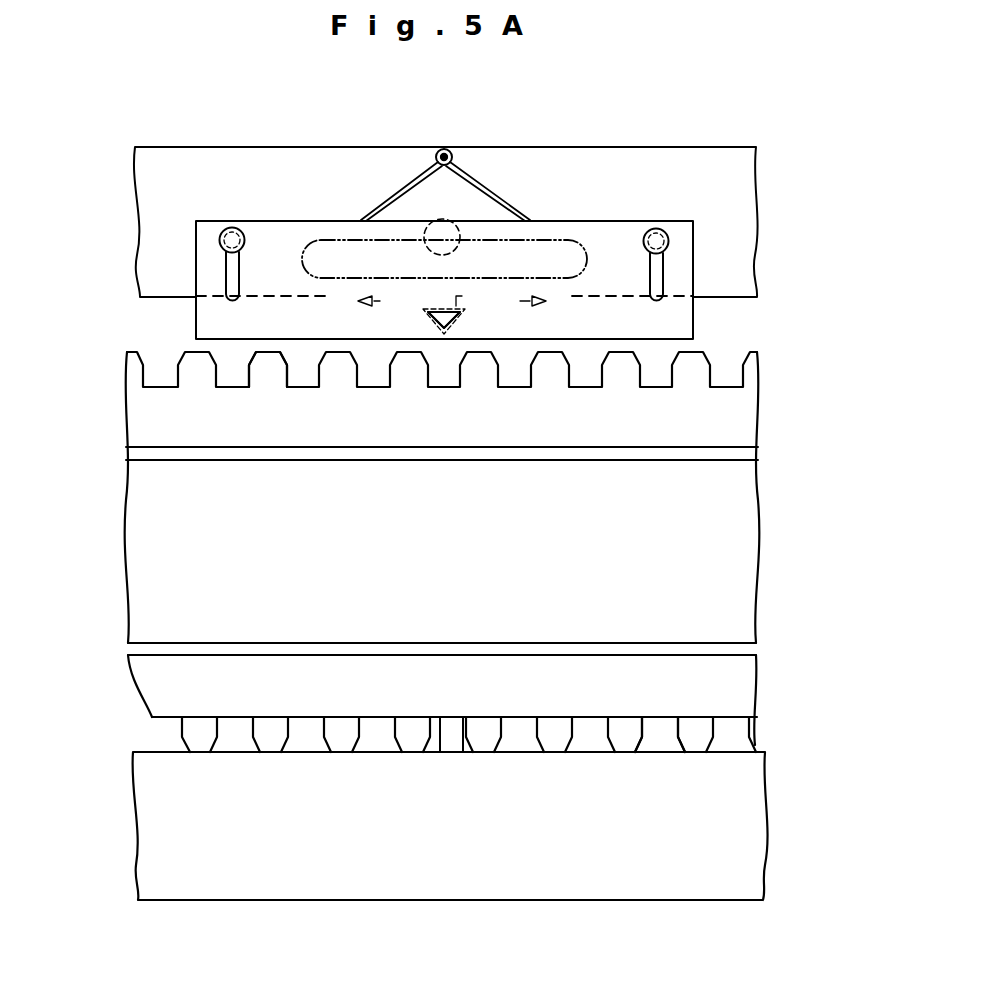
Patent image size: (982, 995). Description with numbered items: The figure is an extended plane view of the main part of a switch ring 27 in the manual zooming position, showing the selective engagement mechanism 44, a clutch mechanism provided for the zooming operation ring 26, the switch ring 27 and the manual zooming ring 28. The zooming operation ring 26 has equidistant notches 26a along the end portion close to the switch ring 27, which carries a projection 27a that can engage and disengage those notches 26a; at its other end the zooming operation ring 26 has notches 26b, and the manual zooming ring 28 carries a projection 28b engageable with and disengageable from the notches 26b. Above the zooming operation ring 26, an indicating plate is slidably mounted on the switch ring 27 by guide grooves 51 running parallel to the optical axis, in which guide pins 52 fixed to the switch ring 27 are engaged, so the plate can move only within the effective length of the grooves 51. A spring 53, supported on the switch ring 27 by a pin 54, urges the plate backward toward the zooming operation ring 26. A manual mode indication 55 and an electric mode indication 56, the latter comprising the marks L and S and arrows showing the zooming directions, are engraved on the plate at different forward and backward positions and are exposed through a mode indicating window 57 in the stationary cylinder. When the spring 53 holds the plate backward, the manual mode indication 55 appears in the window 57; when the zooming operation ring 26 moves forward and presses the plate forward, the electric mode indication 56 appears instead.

The selective engagement mechanism 44 is at (88, 271).
The switch ring 27 is at (165, 163).
The guide grooves 51 is at (228, 274).
The guide pins 52 is at (237, 227).
The spring 53 is at (482, 185).
The pin 54 is at (444, 149).
The manual mode indication 55 is at (347, 265).
The electric mode indication 56 is at (528, 304).
The mode indicating window 57 is at (322, 241).
The zooming operation ring 26 is at (738, 422).
The notches 26a is at (356, 384).
The notches 26b is at (674, 735).
The projection 27a is at (444, 329).
The manual zooming ring 28 is at (720, 878).
The projection 28b is at (450, 733).